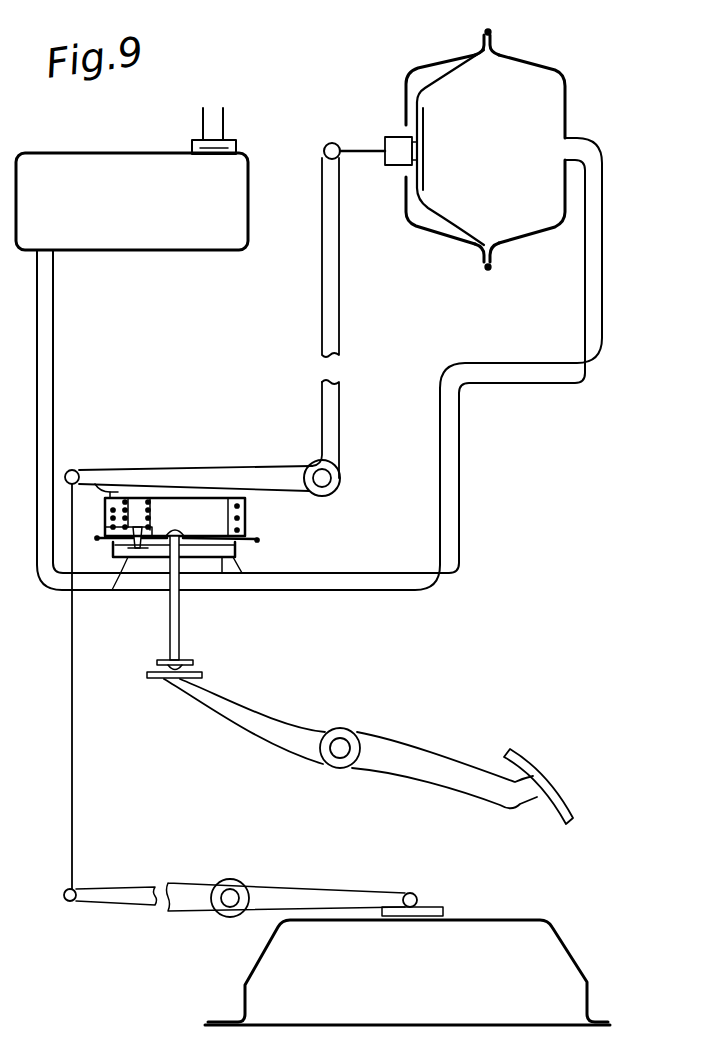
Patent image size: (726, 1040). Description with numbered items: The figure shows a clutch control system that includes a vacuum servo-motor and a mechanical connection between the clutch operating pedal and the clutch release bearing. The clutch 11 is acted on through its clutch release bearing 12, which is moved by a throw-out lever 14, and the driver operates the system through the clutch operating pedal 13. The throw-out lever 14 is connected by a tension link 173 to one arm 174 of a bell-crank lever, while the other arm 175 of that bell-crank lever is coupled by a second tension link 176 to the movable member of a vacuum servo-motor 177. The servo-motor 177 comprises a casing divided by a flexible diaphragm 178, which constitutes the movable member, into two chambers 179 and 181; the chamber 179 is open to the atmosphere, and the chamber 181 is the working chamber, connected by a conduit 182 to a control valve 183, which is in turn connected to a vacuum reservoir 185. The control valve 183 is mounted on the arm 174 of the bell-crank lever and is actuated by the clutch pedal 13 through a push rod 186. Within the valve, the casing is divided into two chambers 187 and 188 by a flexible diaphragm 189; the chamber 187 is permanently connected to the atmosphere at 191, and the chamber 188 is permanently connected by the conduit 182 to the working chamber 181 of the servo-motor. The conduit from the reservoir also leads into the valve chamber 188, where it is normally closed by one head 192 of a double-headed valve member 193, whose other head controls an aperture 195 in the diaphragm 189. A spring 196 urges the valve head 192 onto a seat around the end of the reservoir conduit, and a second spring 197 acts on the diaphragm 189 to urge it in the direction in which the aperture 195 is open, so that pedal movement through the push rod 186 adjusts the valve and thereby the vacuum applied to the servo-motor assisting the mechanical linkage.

The clutch 11 is at (407, 972).
The clutch release bearing 12 is at (423, 895).
The clutch operating pedal 13 is at (400, 745).
The throw-out lever 14 is at (280, 888).
The tension link 173 is at (75, 775).
The arm of bell-crank lever 174 is at (265, 472).
The arm of bell-crank lever 175 is at (322, 299).
The tension link 176 is at (362, 146).
The vacuum servo-motor 177 is at (553, 230).
The flexible diaphragm 178 is at (457, 78).
The chamber 179 is at (433, 223).
The working chamber 181 is at (473, 150).
The conduit 182 is at (47, 326).
The control valve 183 is at (189, 569).
The vacuum reservoir 185 is at (132, 179).
The push rod 186 is at (180, 655).
The chamber 187 is at (205, 507).
The chamber 188 is at (203, 548).
The flexible diaphragm 189 is at (237, 548).
The atmospheric connection 191 is at (247, 519).
The valve head 192 is at (138, 525).
The double-headed valve member 193 is at (135, 548).
The aperture 195 is at (156, 528).
The spring 196 is at (118, 500).
The spring 197 is at (108, 505).